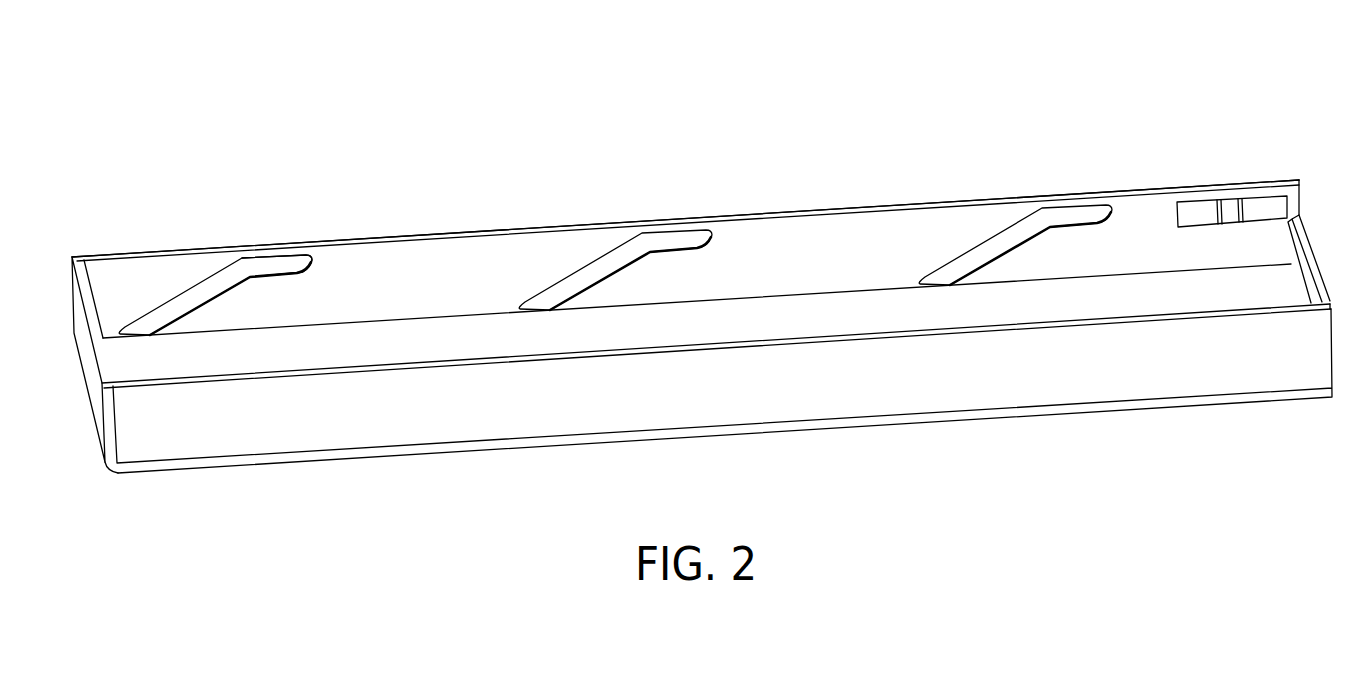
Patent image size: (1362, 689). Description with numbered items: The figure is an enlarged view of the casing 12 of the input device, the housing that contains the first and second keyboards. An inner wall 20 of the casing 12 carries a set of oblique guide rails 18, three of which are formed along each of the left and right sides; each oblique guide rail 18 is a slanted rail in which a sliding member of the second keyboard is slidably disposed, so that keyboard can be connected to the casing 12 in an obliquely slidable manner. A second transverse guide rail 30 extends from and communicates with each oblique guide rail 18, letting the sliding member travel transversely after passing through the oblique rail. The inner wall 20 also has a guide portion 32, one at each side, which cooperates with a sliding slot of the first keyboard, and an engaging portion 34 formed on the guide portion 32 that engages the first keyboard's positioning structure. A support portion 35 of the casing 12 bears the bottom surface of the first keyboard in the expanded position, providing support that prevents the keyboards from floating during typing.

The casing 12 is at (687, 112).
The oblique guide rail 18 is at (196, 294).
The inner wall 20 is at (858, 221).
The second transverse guide rail 30 is at (269, 264).
The guide portion 32 is at (1275, 205).
The engaging portion 34 is at (1222, 205).
The support portion 35 is at (1307, 271).